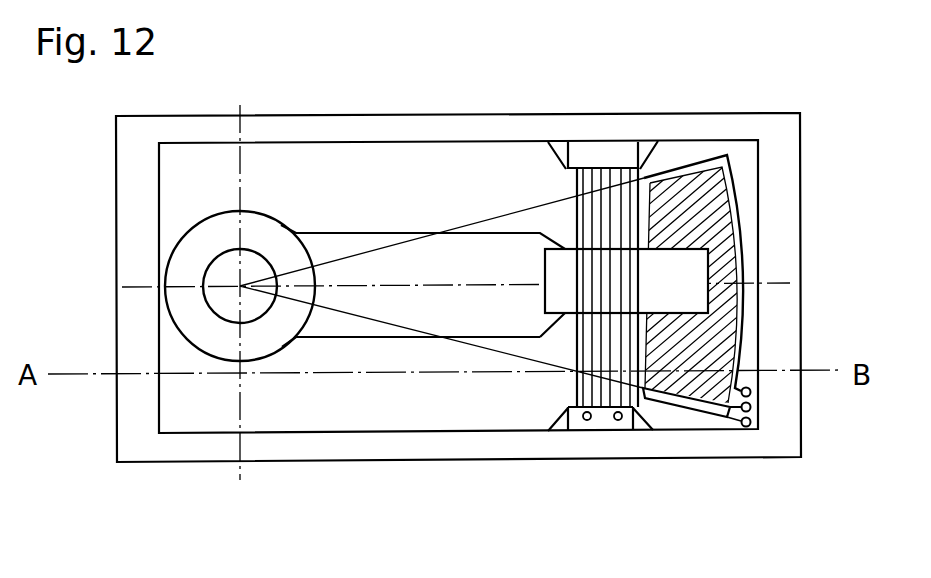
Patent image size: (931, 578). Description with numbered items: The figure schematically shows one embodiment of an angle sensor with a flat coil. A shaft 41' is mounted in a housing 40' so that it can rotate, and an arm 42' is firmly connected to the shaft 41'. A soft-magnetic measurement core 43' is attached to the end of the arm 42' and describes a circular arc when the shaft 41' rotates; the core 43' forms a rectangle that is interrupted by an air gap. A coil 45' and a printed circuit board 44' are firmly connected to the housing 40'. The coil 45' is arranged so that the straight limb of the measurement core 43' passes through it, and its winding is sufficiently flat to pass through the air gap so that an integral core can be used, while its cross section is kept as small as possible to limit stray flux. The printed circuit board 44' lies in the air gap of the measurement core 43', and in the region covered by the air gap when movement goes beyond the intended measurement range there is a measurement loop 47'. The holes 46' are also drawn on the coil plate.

The housing 40' is at (458, 236).
The shaft 41' is at (456, 292).
The arm 42' is at (442, 283).
The soft-magnetic core 43' is at (626, 281).
The printed circuit board 44' is at (724, 279).
The coil 45' is at (603, 347).
The fastening holes 46' is at (637, 475).
The measurement loop 47' is at (720, 449).